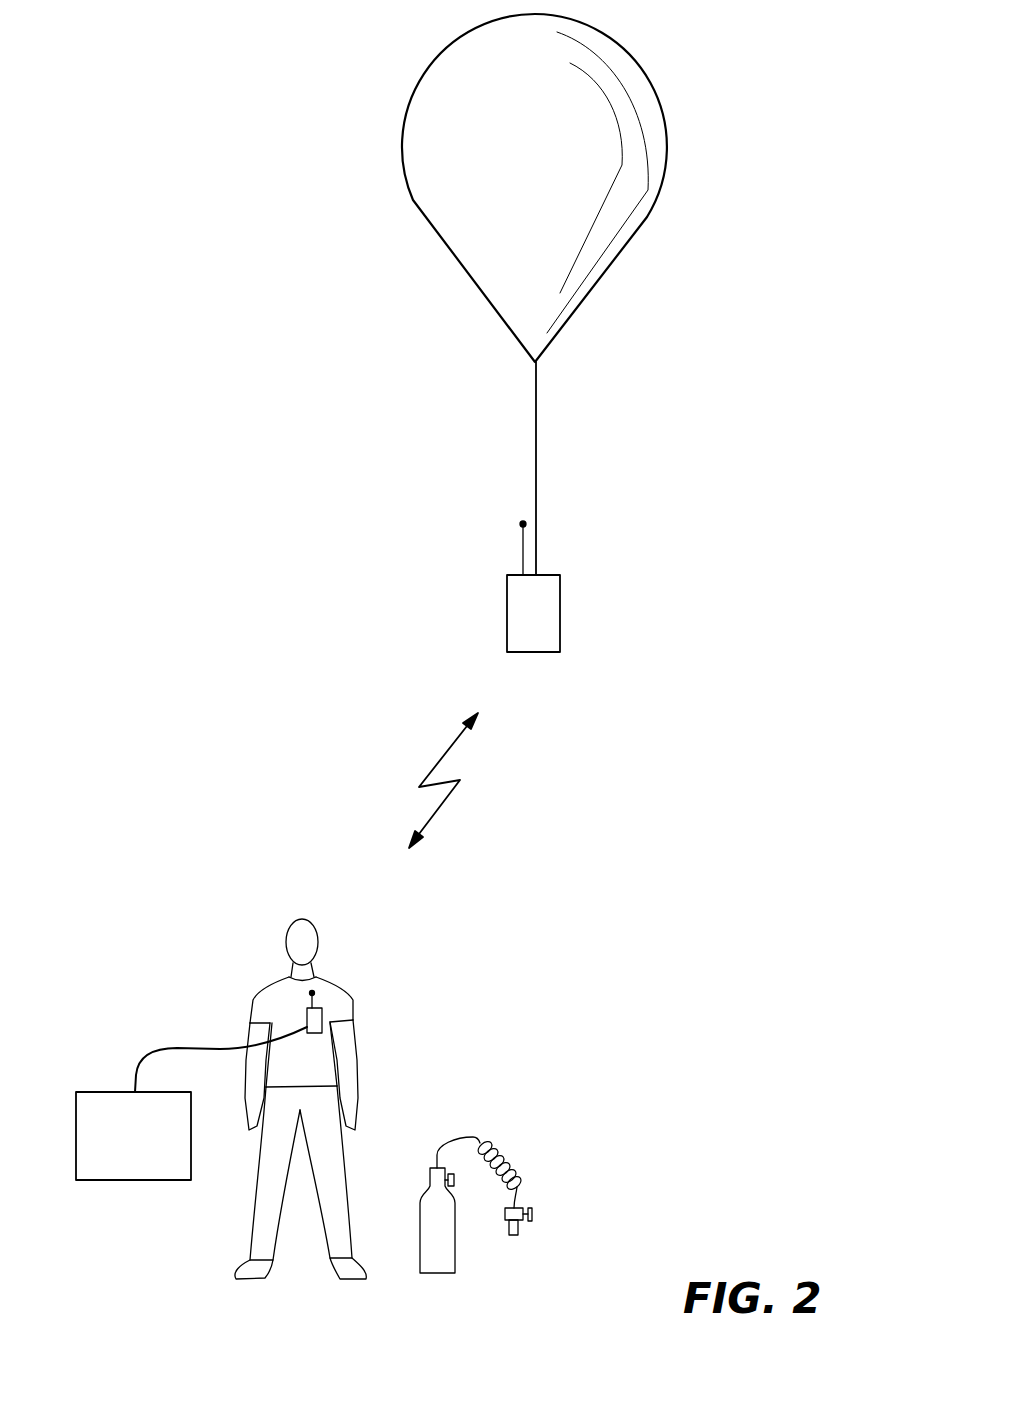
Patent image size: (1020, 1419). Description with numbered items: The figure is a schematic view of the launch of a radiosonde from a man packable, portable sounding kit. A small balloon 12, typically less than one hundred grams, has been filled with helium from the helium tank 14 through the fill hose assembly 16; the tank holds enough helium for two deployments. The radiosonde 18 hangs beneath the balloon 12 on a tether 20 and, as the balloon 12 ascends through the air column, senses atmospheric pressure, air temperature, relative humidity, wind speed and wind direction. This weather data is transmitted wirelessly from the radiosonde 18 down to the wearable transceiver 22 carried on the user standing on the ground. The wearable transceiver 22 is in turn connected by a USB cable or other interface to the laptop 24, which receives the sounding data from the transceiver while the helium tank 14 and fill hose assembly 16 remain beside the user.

The balloon 12 is at (636, 235).
The helium tank 14 is at (435, 1225).
The fill hose assembly 16 is at (500, 1153).
The radiosonde 18 is at (561, 615).
The tether 20 is at (537, 460).
The wearable transceiver 22 is at (318, 1017).
The laptop 24 is at (120, 1166).